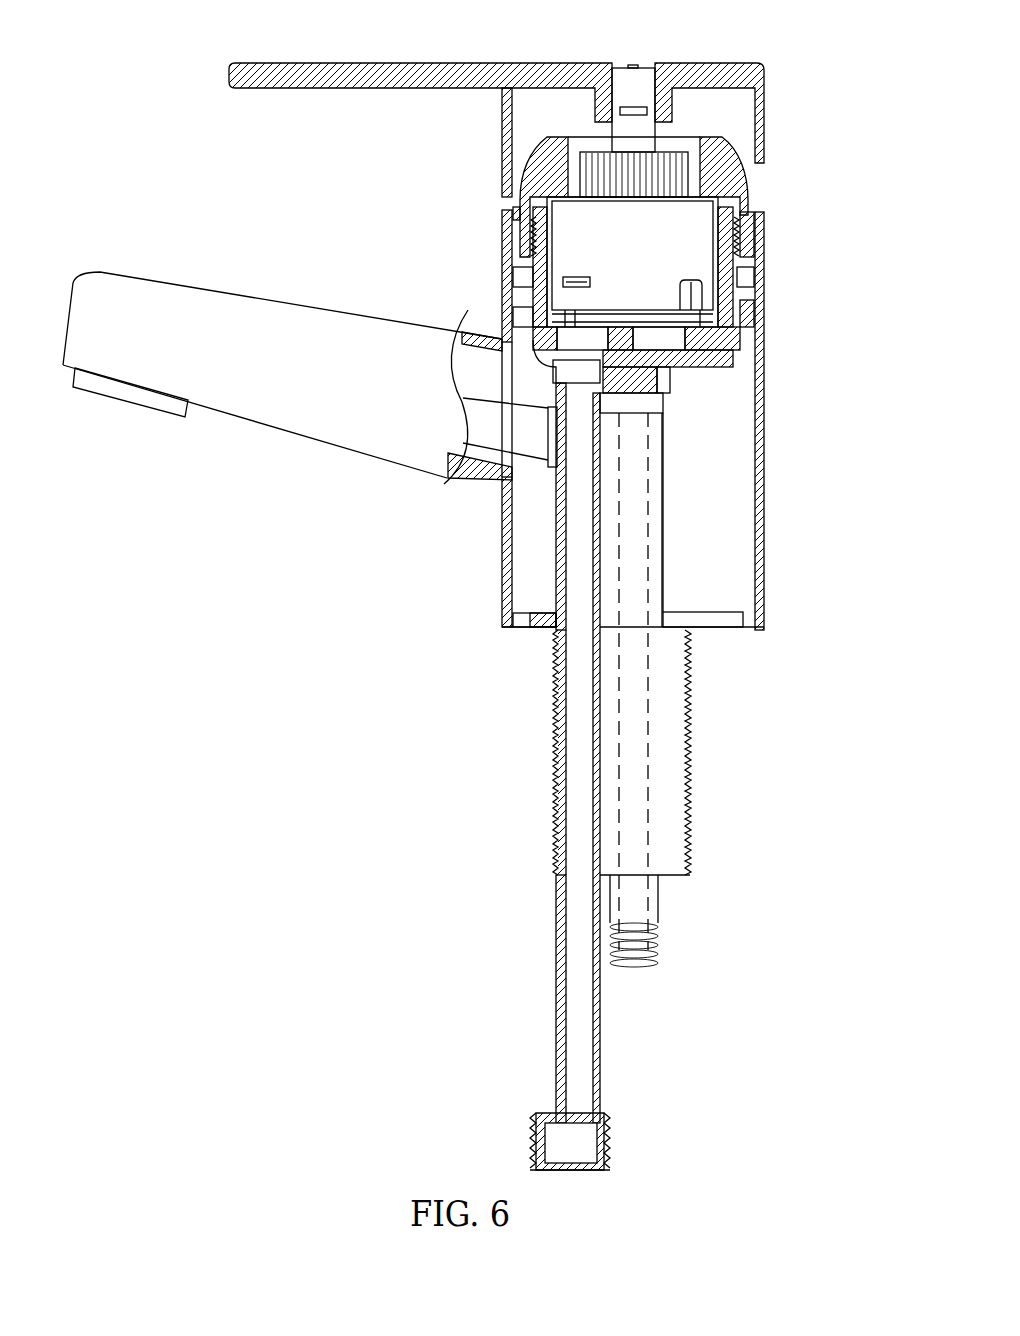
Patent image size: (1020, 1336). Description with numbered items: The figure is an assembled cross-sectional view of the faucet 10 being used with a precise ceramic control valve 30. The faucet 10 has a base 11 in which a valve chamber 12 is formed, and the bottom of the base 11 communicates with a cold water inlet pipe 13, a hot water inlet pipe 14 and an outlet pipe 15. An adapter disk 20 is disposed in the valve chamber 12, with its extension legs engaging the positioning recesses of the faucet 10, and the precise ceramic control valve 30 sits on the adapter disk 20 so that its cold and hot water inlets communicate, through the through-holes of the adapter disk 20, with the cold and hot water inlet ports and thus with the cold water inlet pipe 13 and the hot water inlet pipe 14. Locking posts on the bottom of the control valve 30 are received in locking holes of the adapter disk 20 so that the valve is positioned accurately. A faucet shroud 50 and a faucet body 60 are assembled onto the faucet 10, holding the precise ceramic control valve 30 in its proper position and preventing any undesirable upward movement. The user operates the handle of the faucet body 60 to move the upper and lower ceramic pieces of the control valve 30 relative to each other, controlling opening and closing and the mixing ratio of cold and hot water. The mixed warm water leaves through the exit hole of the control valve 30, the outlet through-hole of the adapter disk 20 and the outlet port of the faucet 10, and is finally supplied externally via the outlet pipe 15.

The faucet 10 is at (728, 366).
The base 11 is at (503, 282).
The valve chamber 12 is at (517, 223).
The cold water inlet pipe 13 is at (742, 680).
The hot water inlet pipe 14 is at (653, 893).
The outlet pipe 15 is at (578, 820).
The adapter disk 20 is at (727, 322).
The precise ceramic control valve 30 is at (690, 249).
The faucet shroud 50 is at (546, 126).
The faucet body 60 is at (490, 523).